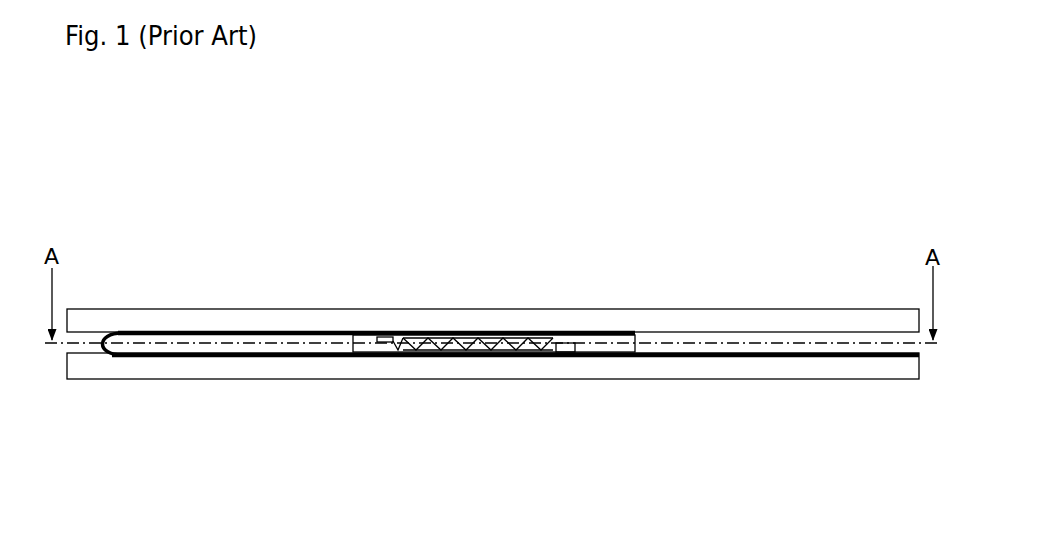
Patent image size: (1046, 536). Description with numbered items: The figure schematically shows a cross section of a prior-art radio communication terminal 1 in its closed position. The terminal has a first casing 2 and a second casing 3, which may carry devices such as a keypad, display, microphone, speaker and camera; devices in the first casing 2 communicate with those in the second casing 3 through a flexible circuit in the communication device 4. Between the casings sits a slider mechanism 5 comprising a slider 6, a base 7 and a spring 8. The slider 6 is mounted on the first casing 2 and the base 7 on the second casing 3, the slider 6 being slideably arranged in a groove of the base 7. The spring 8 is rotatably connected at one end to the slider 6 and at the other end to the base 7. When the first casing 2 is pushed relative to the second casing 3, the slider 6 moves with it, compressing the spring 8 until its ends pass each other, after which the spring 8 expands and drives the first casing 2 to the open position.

The radio communication terminal 1 is at (583, 252).
The first casing 2 is at (688, 316).
The second casing 3 is at (791, 378).
The communication device 4 is at (115, 357).
The slider mechanism 5 is at (333, 359).
The slider 6 is at (318, 333).
The base 7 is at (645, 358).
The spring 8 is at (463, 346).